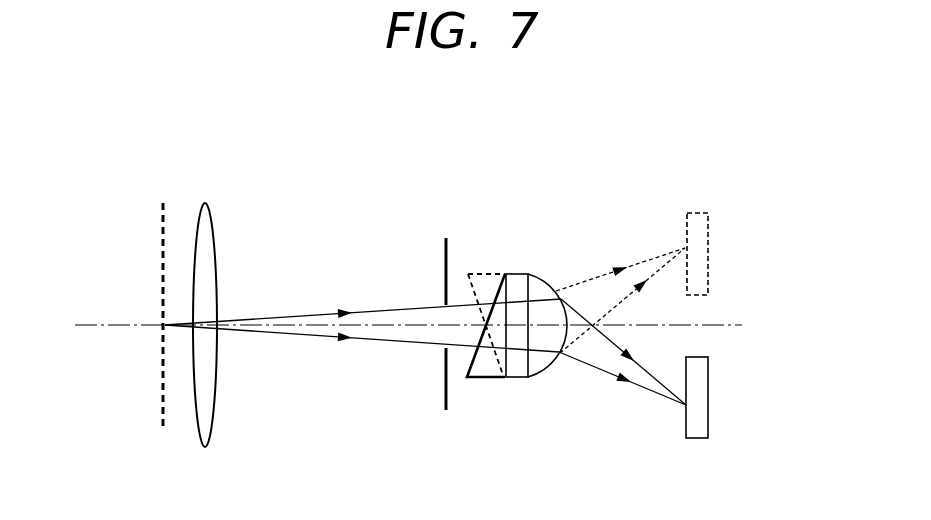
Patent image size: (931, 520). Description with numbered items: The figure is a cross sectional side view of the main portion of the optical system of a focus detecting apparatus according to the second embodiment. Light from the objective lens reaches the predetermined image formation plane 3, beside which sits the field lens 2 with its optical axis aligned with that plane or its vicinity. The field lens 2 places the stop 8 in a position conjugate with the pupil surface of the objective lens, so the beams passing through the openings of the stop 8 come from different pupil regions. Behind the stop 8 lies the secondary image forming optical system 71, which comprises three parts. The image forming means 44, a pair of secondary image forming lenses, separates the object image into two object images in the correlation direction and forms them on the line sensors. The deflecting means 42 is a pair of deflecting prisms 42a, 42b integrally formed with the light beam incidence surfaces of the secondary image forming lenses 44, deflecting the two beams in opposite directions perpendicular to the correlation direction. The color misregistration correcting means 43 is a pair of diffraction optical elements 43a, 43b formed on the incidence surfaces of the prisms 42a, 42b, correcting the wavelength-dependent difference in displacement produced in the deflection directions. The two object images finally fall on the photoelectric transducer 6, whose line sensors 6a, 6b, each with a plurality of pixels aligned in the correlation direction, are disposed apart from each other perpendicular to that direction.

The predetermined image formation plane 3 is at (160, 395).
The field lens 2 is at (195, 420).
The secondary image forming optical system 71 is at (272, 155).
The diffraction optical element 43 is at (282, 252).
The diffraction optical element 43a is at (478, 310).
The diffraction optical element 43b is at (475, 336).
The stop 8 is at (443, 385).
The deflecting means (prism) 42 is at (478, 208).
The deflecting prism 42a is at (464, 292).
The deflecting prism 42b is at (472, 370).
The secondary image forming lens 44 is at (542, 287).
The photoelectric transducer 6 is at (663, 210).
The line sensor 6a is at (700, 248).
The line sensor 6b is at (700, 407).